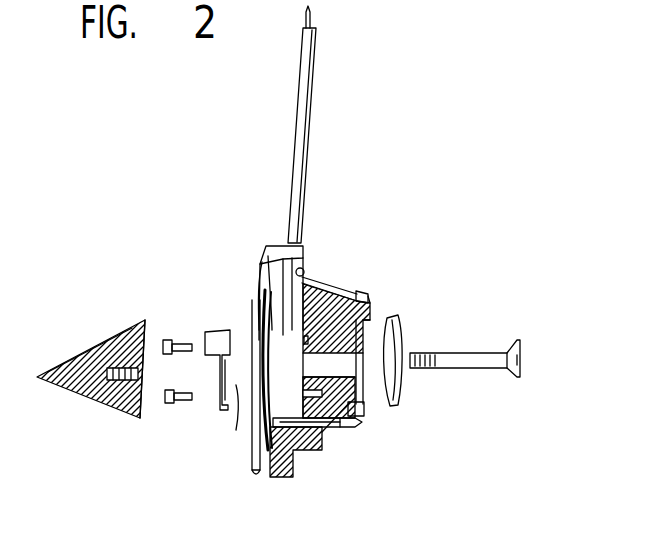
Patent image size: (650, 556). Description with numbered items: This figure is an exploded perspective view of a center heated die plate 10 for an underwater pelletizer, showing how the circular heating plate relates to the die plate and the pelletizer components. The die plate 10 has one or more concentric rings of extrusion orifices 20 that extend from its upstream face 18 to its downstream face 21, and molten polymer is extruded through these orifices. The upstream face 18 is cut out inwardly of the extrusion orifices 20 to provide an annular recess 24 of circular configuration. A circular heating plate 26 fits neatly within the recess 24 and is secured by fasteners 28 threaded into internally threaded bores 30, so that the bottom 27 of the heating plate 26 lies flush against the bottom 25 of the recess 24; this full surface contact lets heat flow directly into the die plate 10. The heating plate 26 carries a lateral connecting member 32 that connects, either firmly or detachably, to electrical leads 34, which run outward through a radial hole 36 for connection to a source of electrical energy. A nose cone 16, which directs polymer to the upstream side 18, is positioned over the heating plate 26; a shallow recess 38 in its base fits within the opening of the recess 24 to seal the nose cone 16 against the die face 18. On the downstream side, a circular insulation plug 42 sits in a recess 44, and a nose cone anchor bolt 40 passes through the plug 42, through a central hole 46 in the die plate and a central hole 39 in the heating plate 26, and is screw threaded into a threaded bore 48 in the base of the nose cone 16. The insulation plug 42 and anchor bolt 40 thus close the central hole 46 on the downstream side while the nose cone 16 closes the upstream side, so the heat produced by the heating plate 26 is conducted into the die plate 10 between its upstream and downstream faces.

The center heated die plate 10 is at (340, 276).
The nose cone 16 is at (77, 378).
The upstream face 18 is at (278, 247).
The extrusion orifices 20 is at (330, 424).
The downstream face 21 is at (370, 310).
The annular recess 24 is at (253, 420).
The bottom of the recess 25 is at (256, 330).
The circular heating plate 26 is at (222, 405).
The bottom of the heating plate 27 is at (238, 340).
The fasteners 28 is at (169, 338).
The internally threaded bores 30 is at (323, 430).
The lateral connecting member 32 is at (212, 333).
The electrical leads 34 is at (308, 80).
The radial hole 36 is at (312, 258).
The shallow recess 38 is at (260, 292).
The central hole in the heating plate 39 is at (236, 385).
The nose cone anchor bolt 40 is at (488, 356).
The circular insulation plug 42 is at (403, 328).
The recess on the downstream side 44 is at (361, 402).
The central hole 46 is at (372, 300).
The threaded bore 48 is at (113, 384).